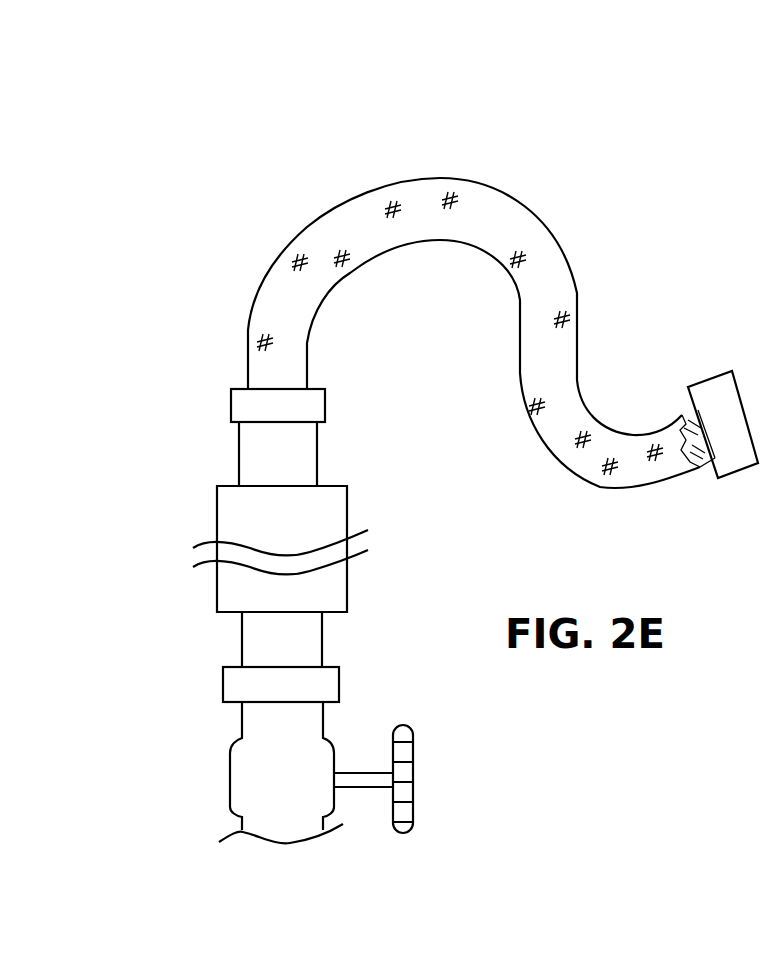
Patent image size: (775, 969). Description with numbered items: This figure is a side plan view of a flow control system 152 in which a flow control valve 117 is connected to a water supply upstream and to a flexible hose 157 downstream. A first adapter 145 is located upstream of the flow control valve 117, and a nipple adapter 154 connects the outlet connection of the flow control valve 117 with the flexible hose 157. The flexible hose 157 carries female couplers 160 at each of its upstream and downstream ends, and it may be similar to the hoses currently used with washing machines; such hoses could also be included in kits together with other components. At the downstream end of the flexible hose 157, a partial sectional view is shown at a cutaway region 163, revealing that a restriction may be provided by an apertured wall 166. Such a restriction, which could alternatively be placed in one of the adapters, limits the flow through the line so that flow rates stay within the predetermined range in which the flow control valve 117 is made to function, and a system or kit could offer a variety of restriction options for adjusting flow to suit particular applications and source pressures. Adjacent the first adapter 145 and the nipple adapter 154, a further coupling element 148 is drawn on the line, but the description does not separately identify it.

The flow control system 152 is at (250, 182).
The flexible hose 157 is at (360, 217).
The female couplers 160 is at (242, 404).
The apertured wall 166 is at (674, 437).
The cutaway region 163 is at (692, 498).
The nipple adapter 154 is at (308, 458).
The flow control valve 117 is at (335, 502).
The first adapter 145 is at (313, 637).
The flange 148 is at (328, 680).